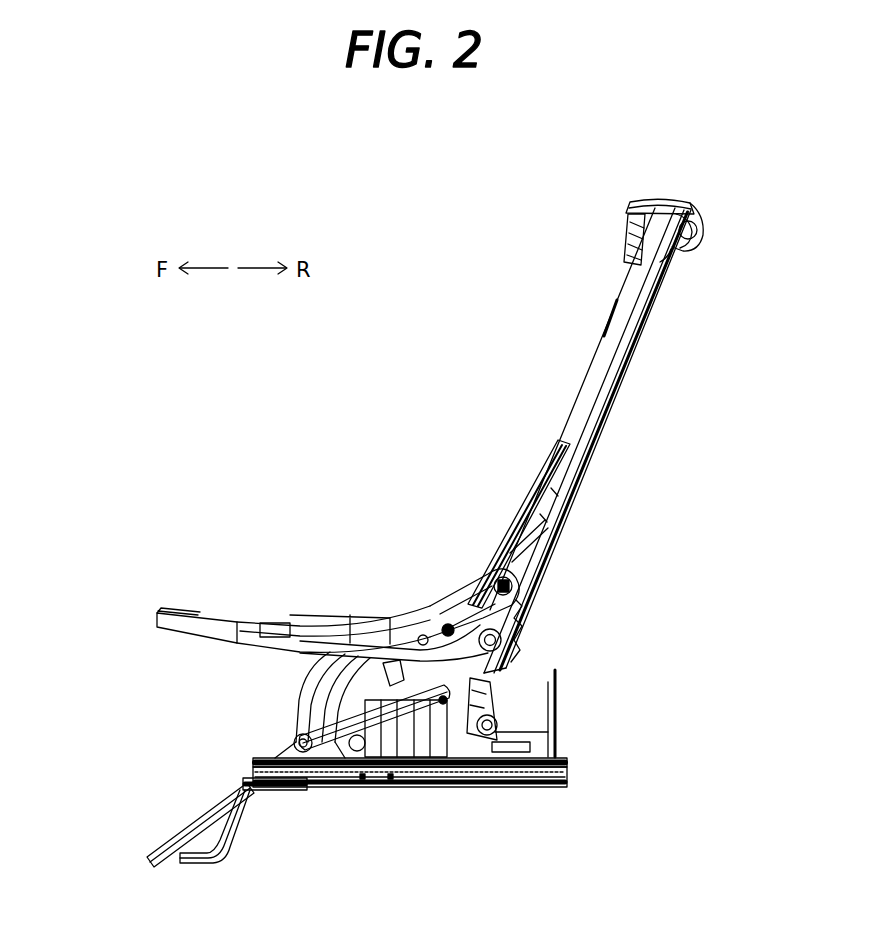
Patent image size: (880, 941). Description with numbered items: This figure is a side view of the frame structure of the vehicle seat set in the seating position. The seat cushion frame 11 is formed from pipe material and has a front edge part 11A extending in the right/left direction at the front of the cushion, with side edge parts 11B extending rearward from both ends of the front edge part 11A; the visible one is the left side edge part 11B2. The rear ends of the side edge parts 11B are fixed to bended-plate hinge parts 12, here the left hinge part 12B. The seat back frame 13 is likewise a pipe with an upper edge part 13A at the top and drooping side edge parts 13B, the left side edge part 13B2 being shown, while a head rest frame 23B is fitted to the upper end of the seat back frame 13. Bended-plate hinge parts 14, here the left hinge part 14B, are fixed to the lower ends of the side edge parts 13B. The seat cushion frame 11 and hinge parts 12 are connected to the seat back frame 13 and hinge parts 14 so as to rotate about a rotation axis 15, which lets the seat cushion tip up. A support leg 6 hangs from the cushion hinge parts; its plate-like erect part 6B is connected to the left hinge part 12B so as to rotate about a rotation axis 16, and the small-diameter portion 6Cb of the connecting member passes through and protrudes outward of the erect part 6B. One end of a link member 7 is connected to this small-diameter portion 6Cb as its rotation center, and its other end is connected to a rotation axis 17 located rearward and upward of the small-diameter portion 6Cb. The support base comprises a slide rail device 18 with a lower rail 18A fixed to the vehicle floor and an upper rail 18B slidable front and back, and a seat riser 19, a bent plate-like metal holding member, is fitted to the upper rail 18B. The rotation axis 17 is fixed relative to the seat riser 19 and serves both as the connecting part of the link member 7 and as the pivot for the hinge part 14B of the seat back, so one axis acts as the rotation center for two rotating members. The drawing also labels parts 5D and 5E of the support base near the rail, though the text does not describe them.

The seat back frame 13 is at (598, 235).
The upper edge part 13A is at (689, 203).
The side edge parts 13B is at (565, 440).
The left side edge part 13B2 is at (613, 303).
The head rest frame 23B is at (641, 206).
The hinge parts 14 is at (505, 514).
The left hinge part 14B is at (510, 553).
The hinge parts 12 is at (409, 592).
The left hinge part 12B is at (437, 617).
The rotation axis 15 is at (520, 582).
The seat cushion frame 11 is at (159, 590).
The front edge part 11A is at (155, 615).
The side edge parts 11B is at (301, 590).
The left side edge part 11B2 is at (220, 615).
The rotation axis 16 is at (353, 616).
The support leg 6 is at (263, 705).
The erect part 6B is at (297, 692).
The small-diameter portion 6Cb is at (296, 783).
The link member 7 is at (337, 758).
The rotation axis 17 is at (449, 760).
The seat riser 19 is at (423, 760).
The slide rail device 18 is at (700, 722).
The lower rail 18A is at (532, 785).
The upper rail 18B is at (568, 760).
The leg bracket 5D is at (230, 843).
The leg arm 5E is at (177, 828).